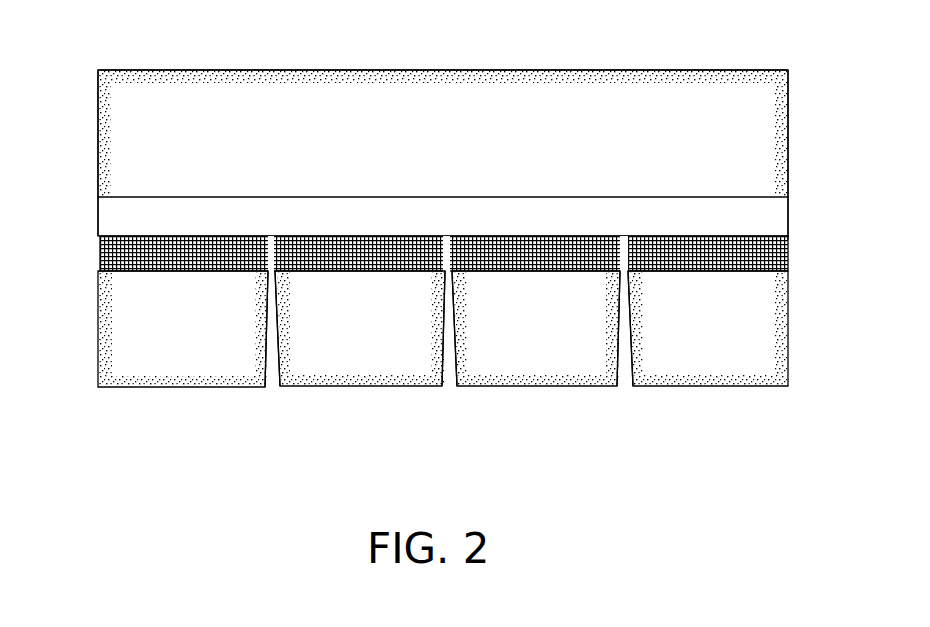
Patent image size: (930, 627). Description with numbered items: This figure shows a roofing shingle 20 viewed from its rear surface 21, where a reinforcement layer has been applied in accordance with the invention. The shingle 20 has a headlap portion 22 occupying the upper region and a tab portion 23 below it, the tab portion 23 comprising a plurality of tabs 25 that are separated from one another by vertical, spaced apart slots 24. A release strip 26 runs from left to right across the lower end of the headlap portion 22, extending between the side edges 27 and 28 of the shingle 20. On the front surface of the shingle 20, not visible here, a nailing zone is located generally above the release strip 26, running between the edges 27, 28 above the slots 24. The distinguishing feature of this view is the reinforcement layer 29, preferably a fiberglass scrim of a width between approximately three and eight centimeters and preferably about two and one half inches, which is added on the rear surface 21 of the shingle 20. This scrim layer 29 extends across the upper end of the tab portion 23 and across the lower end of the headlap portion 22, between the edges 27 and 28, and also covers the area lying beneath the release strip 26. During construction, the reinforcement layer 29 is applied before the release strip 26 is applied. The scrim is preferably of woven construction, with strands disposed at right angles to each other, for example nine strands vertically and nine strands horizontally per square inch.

The shingle 20 is at (371, 113).
The rear surface 21 is at (559, 116).
The headlap portion 22 is at (198, 115).
The tab portion 23 is at (147, 337).
The slots 24 is at (447, 378).
The tabs 25 is at (236, 350).
The release strip 26 is at (255, 210).
The edge 27 is at (97, 170).
The edge 28 is at (788, 133).
The reinforcement layer 29 is at (99, 250).